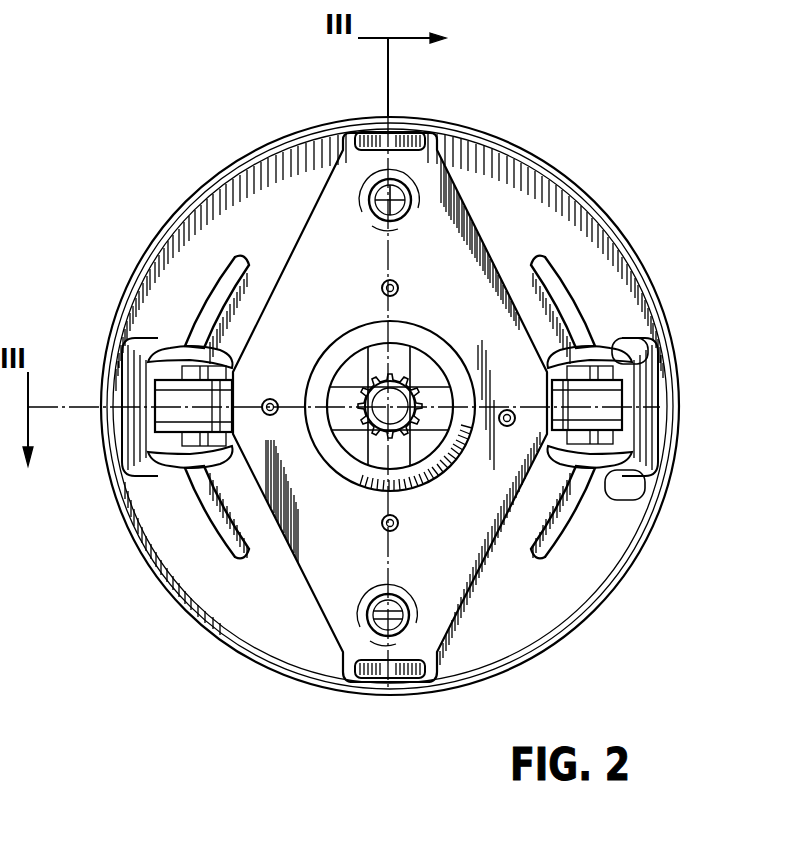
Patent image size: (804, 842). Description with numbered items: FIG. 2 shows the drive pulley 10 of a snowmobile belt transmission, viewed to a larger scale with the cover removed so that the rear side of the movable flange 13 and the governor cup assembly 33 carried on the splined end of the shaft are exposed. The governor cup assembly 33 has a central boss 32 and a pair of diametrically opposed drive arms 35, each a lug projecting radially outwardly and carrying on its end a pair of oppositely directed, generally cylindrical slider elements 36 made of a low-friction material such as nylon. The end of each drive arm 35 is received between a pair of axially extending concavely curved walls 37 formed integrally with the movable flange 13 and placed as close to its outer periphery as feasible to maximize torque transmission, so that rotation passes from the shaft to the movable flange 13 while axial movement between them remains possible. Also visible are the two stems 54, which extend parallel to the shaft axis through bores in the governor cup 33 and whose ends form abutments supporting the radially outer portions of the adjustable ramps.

The drive pulley 10 is at (182, 176).
The movable flange 13 is at (212, 552).
The central boss 32 is at (437, 355).
The governor cup assembly 33 is at (468, 504).
The drive arms 35 is at (607, 410).
The slider elements 36 is at (170, 362).
The concavely curved walls 37 is at (612, 352).
The stem 54 is at (425, 178).